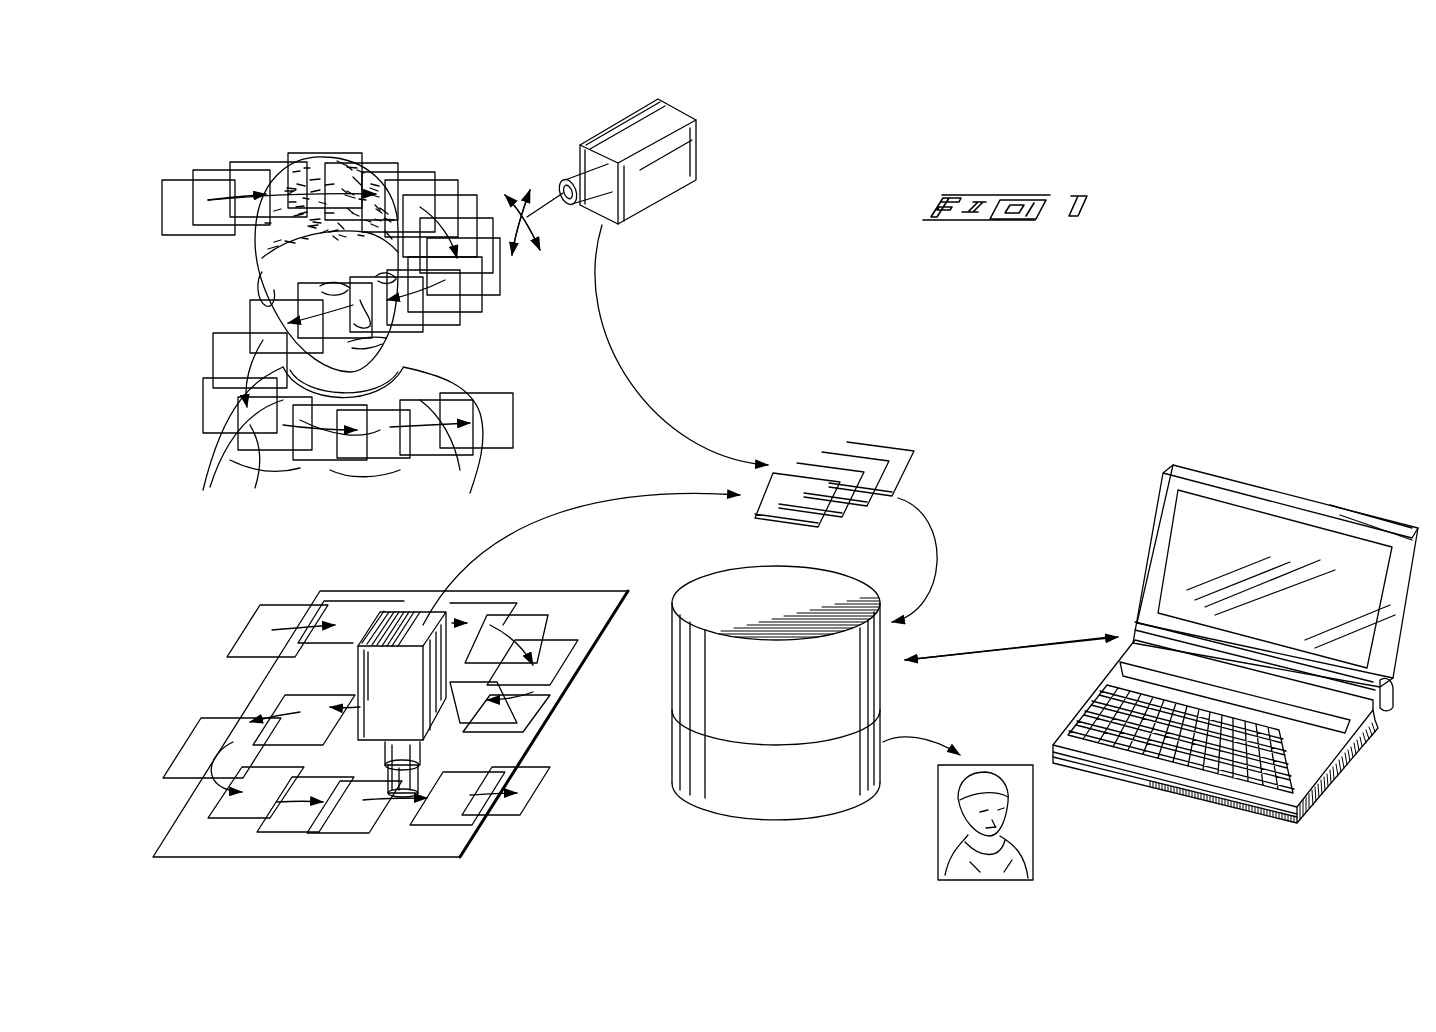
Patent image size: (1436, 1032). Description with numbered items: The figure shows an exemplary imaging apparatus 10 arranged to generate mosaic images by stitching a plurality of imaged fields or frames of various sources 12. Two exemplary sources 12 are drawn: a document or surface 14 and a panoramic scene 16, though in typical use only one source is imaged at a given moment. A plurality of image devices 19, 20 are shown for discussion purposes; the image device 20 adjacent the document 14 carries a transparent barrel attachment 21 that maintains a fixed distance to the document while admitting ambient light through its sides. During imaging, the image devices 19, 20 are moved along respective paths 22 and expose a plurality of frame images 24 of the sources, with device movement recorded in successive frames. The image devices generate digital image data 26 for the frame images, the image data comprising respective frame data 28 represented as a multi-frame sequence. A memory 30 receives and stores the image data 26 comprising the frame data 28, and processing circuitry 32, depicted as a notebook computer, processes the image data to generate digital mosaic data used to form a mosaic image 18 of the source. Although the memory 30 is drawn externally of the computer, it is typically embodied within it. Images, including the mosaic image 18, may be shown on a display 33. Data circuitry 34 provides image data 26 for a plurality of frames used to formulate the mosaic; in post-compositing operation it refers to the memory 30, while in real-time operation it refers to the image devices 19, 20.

The imaging apparatus 10 is at (1216, 268).
The sources 12 is at (342, 505).
The document or surface 14 is at (480, 832).
The panoramic scene 16 is at (460, 377).
The mosaic image 18 is at (1035, 838).
The image device 19 is at (697, 150).
The image device 20 is at (405, 620).
The transparent barrel attachment 21 is at (432, 757).
The paths 22 is at (245, 361).
The frame images 24 is at (176, 237).
The image data 26 is at (762, 532).
The frame data 28 is at (808, 530).
The memory 30 is at (668, 703).
The processing circuitry 32 is at (1318, 498).
The display 33 is at (1237, 552).
The data circuitry 34 is at (718, 188).